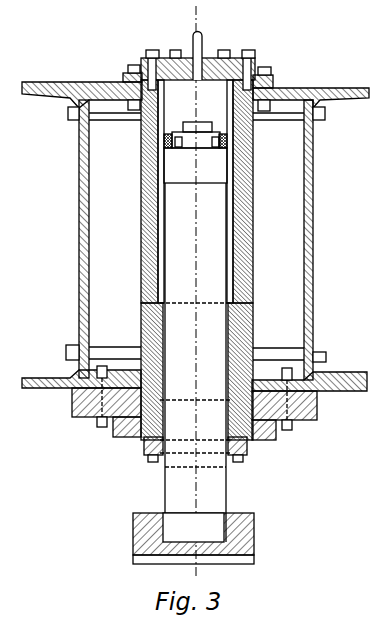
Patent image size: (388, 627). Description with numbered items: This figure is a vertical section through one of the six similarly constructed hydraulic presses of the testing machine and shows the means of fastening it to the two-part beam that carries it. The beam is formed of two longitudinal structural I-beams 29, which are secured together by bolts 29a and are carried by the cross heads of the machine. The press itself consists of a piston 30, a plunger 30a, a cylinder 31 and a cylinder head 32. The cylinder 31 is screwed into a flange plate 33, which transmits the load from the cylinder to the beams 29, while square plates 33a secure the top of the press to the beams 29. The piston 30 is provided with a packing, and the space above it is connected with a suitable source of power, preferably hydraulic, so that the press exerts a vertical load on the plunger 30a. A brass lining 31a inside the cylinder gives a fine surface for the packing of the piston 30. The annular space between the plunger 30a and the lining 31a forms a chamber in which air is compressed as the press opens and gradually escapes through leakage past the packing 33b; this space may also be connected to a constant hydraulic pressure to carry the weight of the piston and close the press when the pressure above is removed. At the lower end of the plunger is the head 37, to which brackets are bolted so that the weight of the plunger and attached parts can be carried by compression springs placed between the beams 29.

The longitudinal beam 29 is at (79, 257).
The bolts 29a is at (104, 355).
The piston 30 is at (195, 152).
The plunger 30a is at (196, 362).
The cylinder 31 is at (251, 270).
The brass lining 31a is at (238, 187).
The cylinder head 32 is at (204, 60).
The flange plate 33 is at (317, 415).
The square plates 33a is at (271, 84).
The packing 33b is at (158, 457).
The head 37 is at (255, 540).